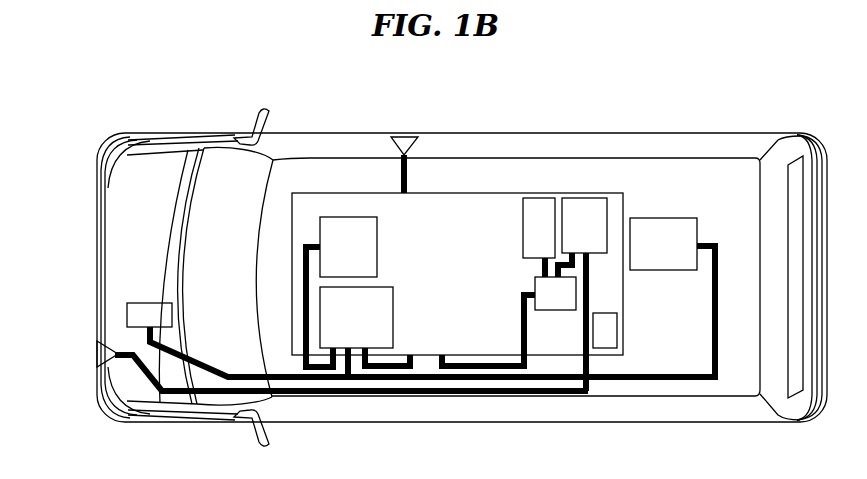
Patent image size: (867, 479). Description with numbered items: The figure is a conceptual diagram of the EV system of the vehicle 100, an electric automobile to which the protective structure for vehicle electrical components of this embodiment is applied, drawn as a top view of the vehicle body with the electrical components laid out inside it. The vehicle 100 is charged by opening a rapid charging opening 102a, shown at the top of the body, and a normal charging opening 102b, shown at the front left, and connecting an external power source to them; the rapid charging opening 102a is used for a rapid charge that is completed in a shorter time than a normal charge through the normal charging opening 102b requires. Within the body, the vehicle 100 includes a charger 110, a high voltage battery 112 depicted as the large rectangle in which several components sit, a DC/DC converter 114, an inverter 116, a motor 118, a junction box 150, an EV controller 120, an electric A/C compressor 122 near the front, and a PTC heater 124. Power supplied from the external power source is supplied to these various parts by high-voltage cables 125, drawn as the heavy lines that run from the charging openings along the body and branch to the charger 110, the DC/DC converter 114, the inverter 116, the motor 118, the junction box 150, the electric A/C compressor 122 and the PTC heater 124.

The vehicle 100 is at (713, 108).
The rapid charging opening 102a is at (405, 137).
The normal charging opening 102b is at (97, 351).
The charger 110 is at (583, 210).
The high voltage battery 112 is at (448, 194).
The DC/DC converter 114 is at (523, 233).
The inverter 116 is at (389, 319).
The motor 118 is at (664, 228).
The EV controller 120 is at (614, 331).
The electric A/C compressor 122 is at (144, 304).
The PTC heater 124 is at (346, 222).
The high-voltage cables 125 is at (482, 394).
The junction box 150 is at (535, 291).